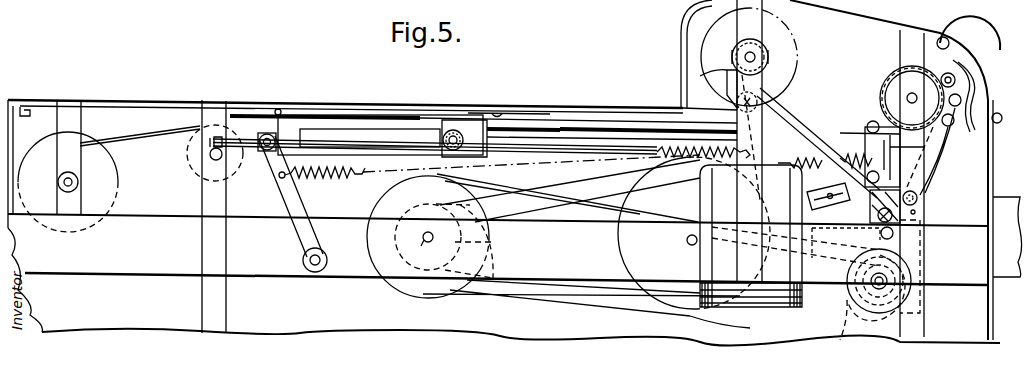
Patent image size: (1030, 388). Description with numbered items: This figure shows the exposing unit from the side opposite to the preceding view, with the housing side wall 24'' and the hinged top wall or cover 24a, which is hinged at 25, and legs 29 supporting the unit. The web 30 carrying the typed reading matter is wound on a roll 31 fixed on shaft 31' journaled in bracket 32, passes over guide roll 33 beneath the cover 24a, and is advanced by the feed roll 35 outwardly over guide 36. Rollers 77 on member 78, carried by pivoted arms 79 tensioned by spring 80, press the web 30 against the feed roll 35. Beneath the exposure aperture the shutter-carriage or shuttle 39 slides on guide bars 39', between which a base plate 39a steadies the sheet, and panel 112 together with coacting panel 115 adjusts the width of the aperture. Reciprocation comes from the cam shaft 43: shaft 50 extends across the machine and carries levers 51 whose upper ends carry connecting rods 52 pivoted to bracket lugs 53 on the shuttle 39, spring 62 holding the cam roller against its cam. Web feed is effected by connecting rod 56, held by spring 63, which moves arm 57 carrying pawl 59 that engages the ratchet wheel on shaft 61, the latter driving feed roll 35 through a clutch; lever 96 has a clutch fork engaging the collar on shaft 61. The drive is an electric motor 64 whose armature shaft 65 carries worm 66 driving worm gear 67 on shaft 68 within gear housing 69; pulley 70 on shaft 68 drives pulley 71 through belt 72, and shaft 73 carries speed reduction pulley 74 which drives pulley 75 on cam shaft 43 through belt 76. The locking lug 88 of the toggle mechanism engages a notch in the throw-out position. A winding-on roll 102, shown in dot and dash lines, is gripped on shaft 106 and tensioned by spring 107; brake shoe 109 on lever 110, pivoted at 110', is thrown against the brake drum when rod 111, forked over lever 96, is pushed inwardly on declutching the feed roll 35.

The top wall or cover 24a is at (68, 100).
The side wall 24'' is at (521, 334).
The hinge 25 is at (998, 124).
The legs 29 is at (203, 298).
The web 30 is at (165, 125).
The roll 31 is at (81, 182).
The shaft 31' is at (105, 189).
The bracket 32 is at (81, 120).
The guide roll 33 is at (196, 146).
The feed roll 35 is at (889, 92).
The guide 36 is at (950, 42).
The shutter-carriage or shuttle 39 is at (483, 100).
The guide bars 39' is at (433, 112).
The base plate 39a is at (520, 136).
The cam shaft 43 is at (687, 242).
The shaft 50 is at (310, 271).
The levers 51 is at (285, 199).
The connecting rods 52 is at (350, 140).
The bracket lugs 53 is at (458, 128).
The connecting rod 56 is at (833, 202).
The arm 57 is at (868, 137).
The pawl 59 is at (873, 122).
The shaft 61 is at (908, 94).
The spring 62 is at (489, 179).
The spring 63 is at (849, 151).
The electric motor 64 is at (766, 298).
The armature shaft 65 is at (816, 247).
The worm 66 is at (924, 244).
The worm gear 67 is at (930, 297).
The shaft 68 is at (924, 273).
The gear housing 69 is at (845, 305).
The pulley 70 is at (856, 333).
The pulley 71 is at (432, 300).
The belt 72 is at (495, 188).
The shaft 73 is at (428, 237).
The speed reduction pulley 74 is at (479, 241).
The pulley 75 is at (676, 304).
The belt 76 is at (642, 190).
The rollers 77 is at (958, 80).
The member 78 is at (975, 92).
The arms 79 is at (936, 162).
The spring 80 is at (920, 202).
The locking projection or lug 88 is at (773, 150).
The lever 96 is at (925, 147).
The winding-on roll 102 is at (778, 31).
The shaft 106 is at (738, 55).
The spring 107 is at (770, 57).
The brake shoe 109 is at (700, 76).
The lever 110 is at (818, 143).
The pivot 110' is at (727, 137).
The rod 111 is at (892, 218).
The panel 112 is at (278, 110).
The coacting panel 115 is at (495, 110).